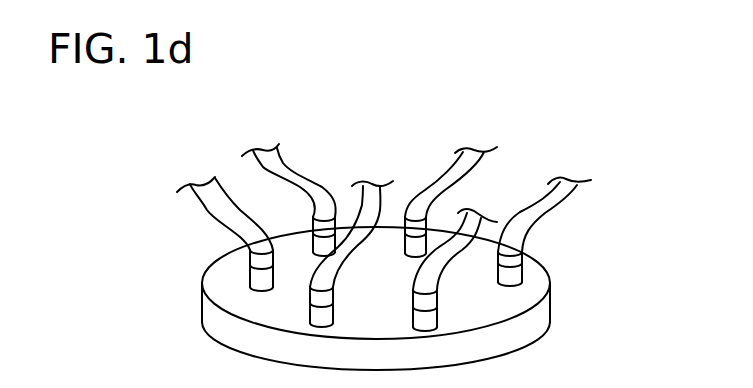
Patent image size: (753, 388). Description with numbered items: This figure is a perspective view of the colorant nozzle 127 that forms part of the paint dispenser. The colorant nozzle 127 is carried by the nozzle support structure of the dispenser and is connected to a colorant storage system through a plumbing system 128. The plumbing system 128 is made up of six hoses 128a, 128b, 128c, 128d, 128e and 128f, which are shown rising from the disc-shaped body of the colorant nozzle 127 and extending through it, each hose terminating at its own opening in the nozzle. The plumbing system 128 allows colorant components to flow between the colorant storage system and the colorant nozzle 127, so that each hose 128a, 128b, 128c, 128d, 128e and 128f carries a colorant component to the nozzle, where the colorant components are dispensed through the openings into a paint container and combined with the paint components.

The colorant nozzle 127 is at (530, 323).
The plumbing system 128 is at (202, 161).
The hose 128a is at (210, 211).
The hose 128b is at (312, 188).
The hose 128c is at (433, 181).
The hose 128d is at (558, 200).
The hose 128e is at (466, 234).
The hose 128f is at (368, 221).